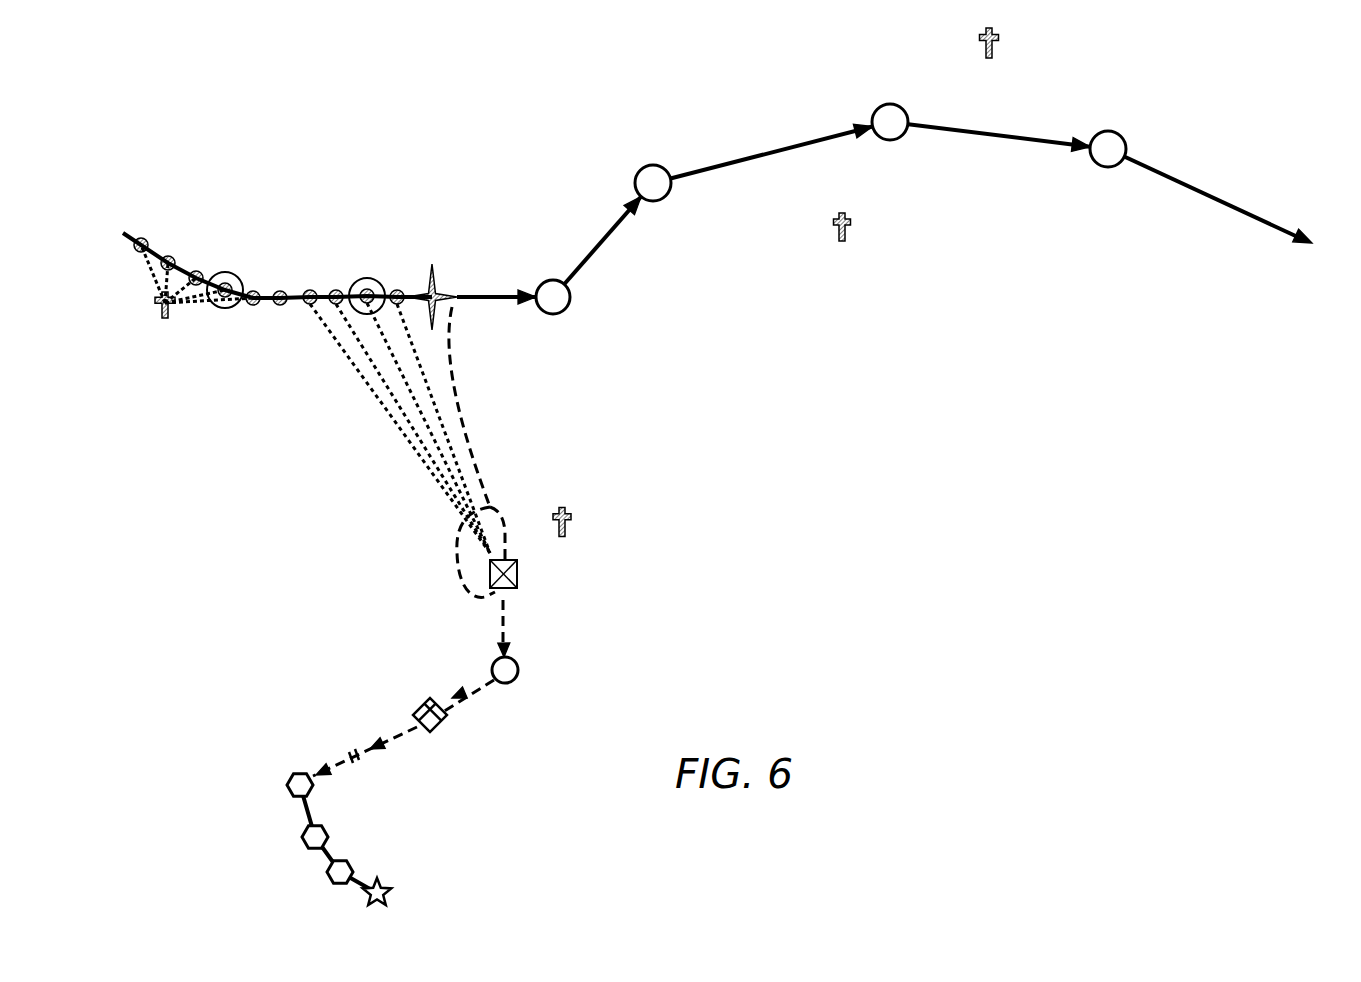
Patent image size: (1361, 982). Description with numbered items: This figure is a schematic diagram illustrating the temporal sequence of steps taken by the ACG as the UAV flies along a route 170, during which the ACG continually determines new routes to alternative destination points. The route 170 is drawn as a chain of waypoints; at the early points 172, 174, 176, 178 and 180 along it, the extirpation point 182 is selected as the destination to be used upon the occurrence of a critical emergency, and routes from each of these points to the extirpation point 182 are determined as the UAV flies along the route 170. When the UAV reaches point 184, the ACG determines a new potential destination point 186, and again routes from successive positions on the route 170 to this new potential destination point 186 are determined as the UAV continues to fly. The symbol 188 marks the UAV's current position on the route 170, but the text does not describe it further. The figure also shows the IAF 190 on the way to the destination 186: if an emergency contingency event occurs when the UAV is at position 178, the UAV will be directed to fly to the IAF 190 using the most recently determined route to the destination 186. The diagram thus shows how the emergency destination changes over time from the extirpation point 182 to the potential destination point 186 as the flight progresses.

The route 170 is at (717, 460).
The point 172 is at (143, 237).
The point 174 is at (170, 256).
The point 176 is at (199, 271).
The point 178 is at (231, 283).
The point 180 is at (256, 290).
The extirpation point 182 is at (158, 305).
The point 184 is at (310, 305).
The potential destination point 186 is at (388, 882).
The current position star symbol 188 is at (445, 292).
The IAF 190 is at (518, 576).